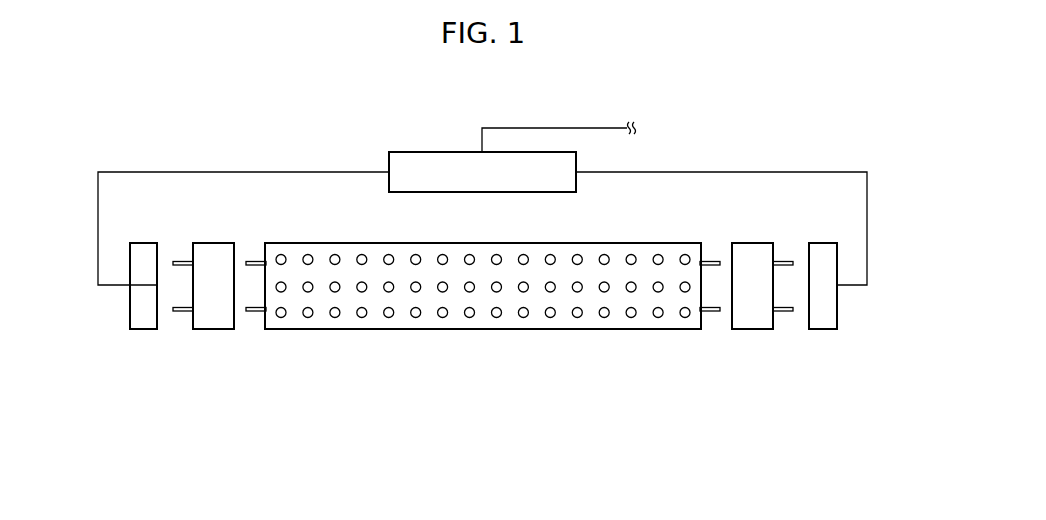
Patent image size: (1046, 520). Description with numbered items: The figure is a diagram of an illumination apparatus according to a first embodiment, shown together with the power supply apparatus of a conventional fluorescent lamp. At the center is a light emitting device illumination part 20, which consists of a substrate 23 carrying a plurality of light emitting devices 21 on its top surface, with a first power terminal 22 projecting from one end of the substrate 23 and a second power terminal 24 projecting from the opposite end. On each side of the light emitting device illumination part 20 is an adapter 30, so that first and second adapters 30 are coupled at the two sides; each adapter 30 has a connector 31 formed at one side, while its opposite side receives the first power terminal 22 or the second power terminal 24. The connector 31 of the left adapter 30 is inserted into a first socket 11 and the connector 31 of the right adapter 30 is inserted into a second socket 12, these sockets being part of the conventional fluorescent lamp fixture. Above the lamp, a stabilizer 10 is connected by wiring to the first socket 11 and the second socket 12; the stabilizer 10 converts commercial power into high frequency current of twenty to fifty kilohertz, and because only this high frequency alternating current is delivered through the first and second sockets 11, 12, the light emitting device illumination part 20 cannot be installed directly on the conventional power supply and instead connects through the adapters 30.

The stabilizer 10 is at (443, 151).
The first socket 11 is at (143, 329).
The second socket 12 is at (829, 329).
The light emitting device illumination part 20 is at (420, 332).
The light emitting devices 21 is at (495, 318).
The first power terminal 22 is at (255, 312).
The substrate 23 is at (546, 330).
The second power terminal 24 is at (710, 312).
The adapter 30 is at (214, 331).
The connector 31 is at (183, 312).